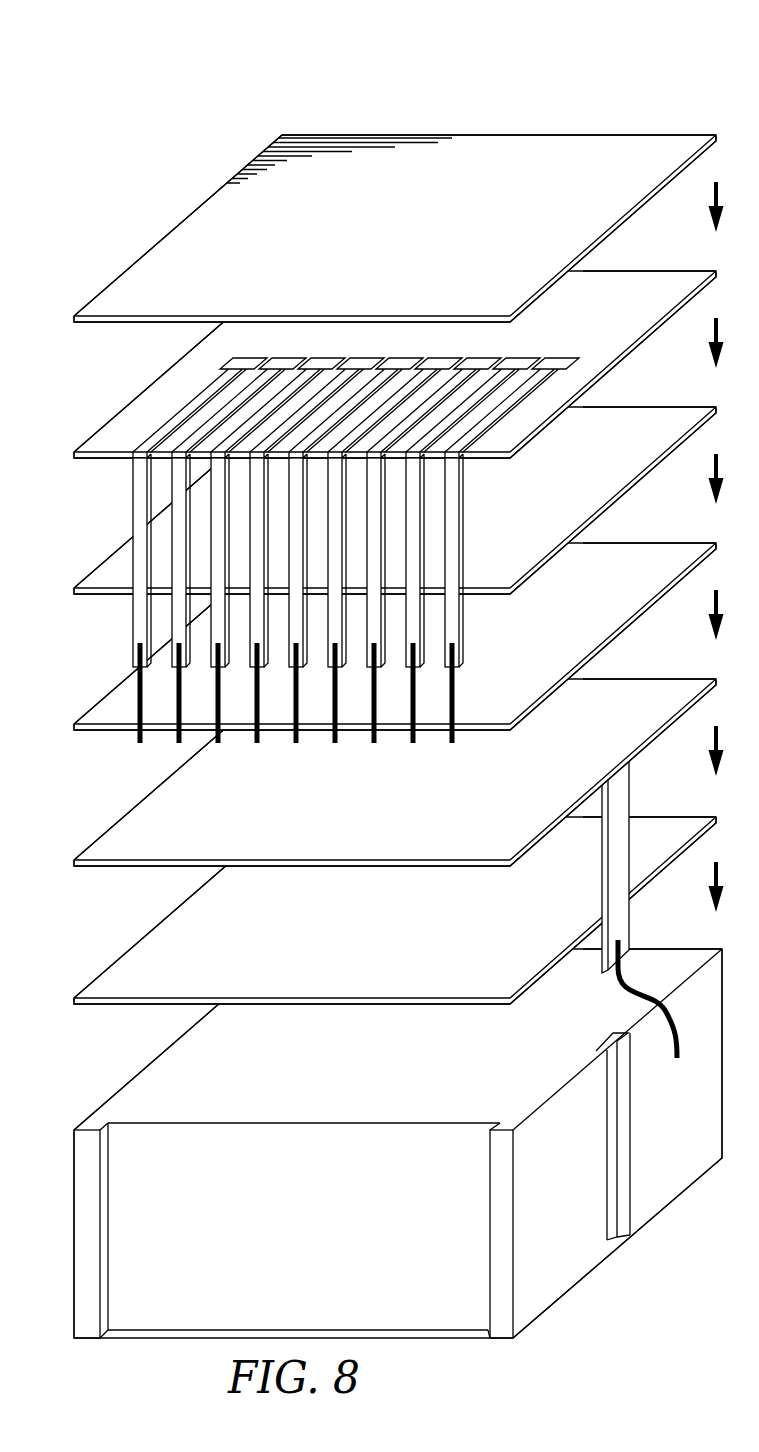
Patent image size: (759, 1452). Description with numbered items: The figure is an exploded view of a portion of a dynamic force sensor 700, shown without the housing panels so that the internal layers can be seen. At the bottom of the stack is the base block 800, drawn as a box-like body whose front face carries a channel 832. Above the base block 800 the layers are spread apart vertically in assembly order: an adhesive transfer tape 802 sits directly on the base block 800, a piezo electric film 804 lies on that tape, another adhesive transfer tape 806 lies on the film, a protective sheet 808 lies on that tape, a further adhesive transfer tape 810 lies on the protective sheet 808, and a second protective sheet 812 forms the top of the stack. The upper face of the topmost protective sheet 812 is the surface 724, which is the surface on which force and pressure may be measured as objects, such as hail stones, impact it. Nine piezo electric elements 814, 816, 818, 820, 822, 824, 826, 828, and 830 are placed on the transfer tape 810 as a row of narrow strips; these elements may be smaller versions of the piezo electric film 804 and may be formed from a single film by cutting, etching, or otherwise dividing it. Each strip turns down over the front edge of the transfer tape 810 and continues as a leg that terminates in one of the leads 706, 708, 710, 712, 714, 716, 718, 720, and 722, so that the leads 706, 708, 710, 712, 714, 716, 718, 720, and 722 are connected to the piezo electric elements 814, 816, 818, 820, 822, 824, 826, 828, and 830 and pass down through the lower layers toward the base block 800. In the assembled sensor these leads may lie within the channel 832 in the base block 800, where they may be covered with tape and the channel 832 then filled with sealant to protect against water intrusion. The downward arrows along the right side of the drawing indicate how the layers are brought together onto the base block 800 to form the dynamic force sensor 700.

The dynamic force sensor 700 is at (579, 87).
The lead 706 is at (136, 694).
The lead 708 is at (177, 706).
The lead 710 is at (216, 707).
The lead 712 is at (255, 707).
The lead 714 is at (298, 704).
The lead 716 is at (336, 705).
The lead 718 is at (375, 705).
The lead 720 is at (415, 705).
The lead 722 is at (454, 692).
The surface 724 is at (478, 192).
The base block 800 is at (398, 1143).
The adhesive transfer tape 802 is at (122, 968).
The piezo electric film 804 is at (102, 849).
The adhesive transfer tape 806 is at (648, 556).
The protective sheet 808 is at (102, 578).
The adhesive transfer tape 810 is at (122, 428).
The protective sheet 812 is at (395, 228).
The piezo electric element 814 is at (250, 360).
The piezo electric element 816 is at (289, 360).
The piezo electric element 818 is at (328, 360).
The piezo electric element 820 is at (367, 360).
The piezo electric element 822 is at (406, 360).
The piezo electric element 824 is at (445, 360).
The piezo electric element 826 is at (484, 360).
The piezo electric element 828 is at (523, 360).
The piezo electric element 830 is at (562, 360).
The channel 832 is at (330, 1242).